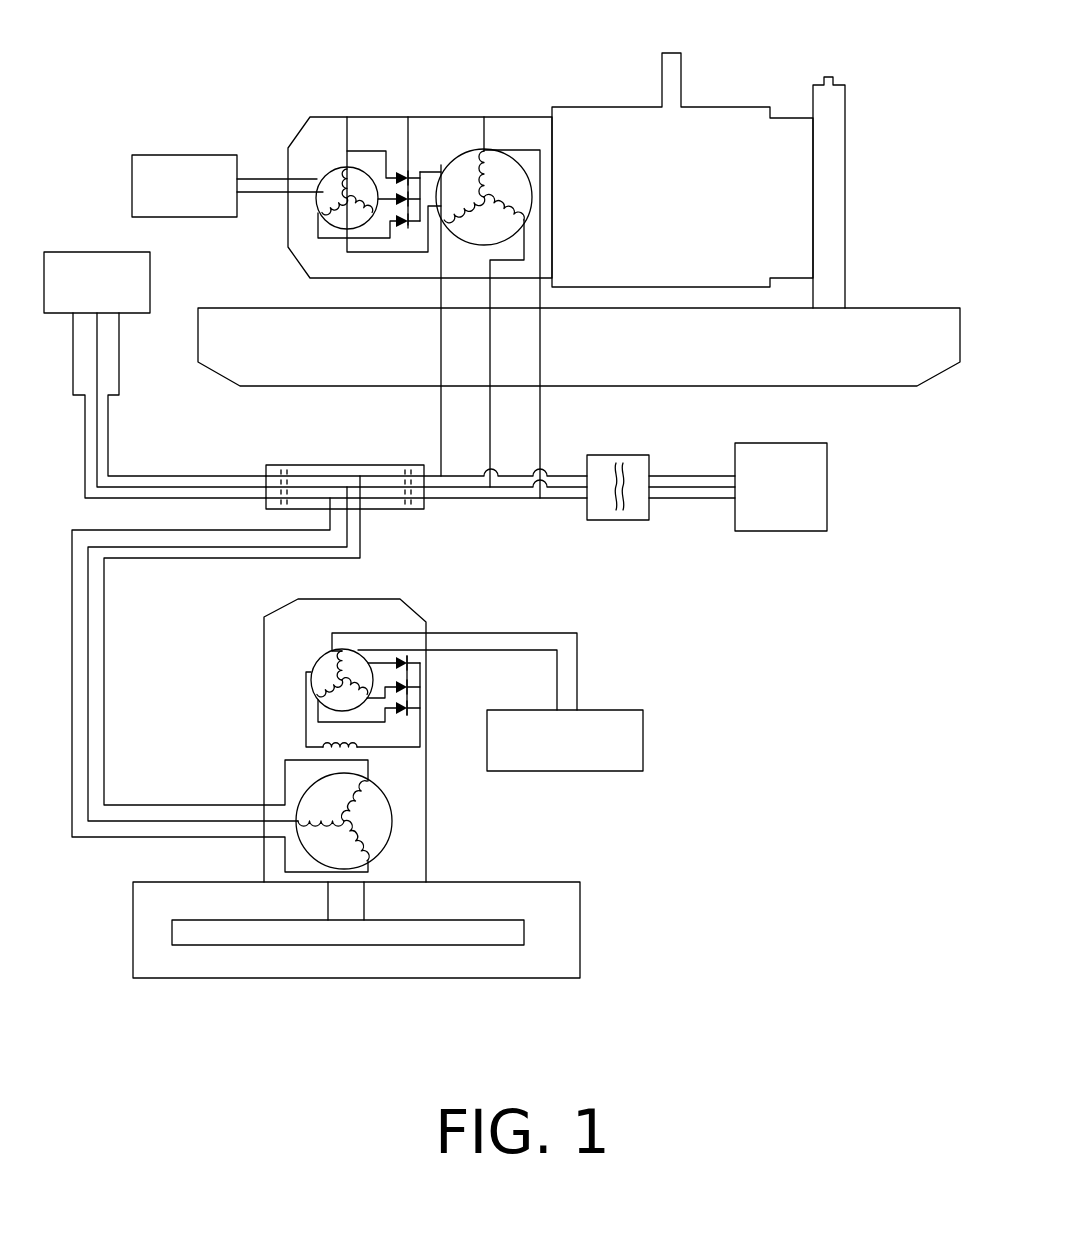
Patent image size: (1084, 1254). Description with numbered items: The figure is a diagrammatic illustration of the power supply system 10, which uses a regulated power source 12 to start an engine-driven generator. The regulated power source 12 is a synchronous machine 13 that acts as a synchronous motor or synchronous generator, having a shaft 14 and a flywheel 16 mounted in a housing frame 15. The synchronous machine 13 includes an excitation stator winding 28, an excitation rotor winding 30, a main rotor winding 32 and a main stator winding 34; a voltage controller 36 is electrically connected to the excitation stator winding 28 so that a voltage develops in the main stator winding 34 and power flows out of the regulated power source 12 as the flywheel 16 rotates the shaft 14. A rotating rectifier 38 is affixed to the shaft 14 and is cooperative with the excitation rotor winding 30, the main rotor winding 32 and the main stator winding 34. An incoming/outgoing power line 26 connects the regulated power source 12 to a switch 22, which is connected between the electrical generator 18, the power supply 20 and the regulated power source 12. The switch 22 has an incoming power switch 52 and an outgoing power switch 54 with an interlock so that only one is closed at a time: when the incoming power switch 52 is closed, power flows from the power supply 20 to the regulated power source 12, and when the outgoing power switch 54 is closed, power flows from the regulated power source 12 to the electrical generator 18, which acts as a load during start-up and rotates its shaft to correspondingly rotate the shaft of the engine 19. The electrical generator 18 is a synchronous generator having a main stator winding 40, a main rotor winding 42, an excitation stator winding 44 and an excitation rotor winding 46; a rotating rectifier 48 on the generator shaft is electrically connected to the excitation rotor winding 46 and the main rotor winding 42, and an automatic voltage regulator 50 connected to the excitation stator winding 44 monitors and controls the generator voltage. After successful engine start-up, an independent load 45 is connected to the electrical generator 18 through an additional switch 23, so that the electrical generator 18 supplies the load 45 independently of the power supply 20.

The power supply system 10 is at (674, 567).
The regulated power source 12 is at (629, 791).
The synchronous machine 13 is at (477, 816).
The shaft 14 is at (362, 905).
The housing frame 15 is at (580, 943).
The flywheel 16 is at (495, 920).
The electrical generator 18 is at (433, 70).
The engine 19 is at (746, 74).
The power supply 20 is at (97, 252).
The switch 22 is at (330, 465).
The additional switch 23 is at (624, 455).
The incoming/outgoing power line 26 is at (105, 678).
The excitation stator winding 28 is at (360, 655).
The excitation rotor winding 30 is at (340, 672).
The main rotor winding 32 is at (320, 752).
The main stator winding 34 is at (370, 838).
The voltage controller 36 is at (644, 733).
The rotating rectifier 38 is at (425, 698).
The main stator winding 40 is at (481, 150).
The main rotor winding 42 is at (440, 170).
The excitation stator winding 44 is at (323, 170).
The load 45 is at (829, 494).
The excitation rotor winding 46 is at (347, 117).
The rotating rectifier 48 is at (408, 117).
The automatic voltage regulator 50 is at (184, 155).
The incoming power switch 52 is at (283, 465).
The outgoing power switch 54 is at (406, 465).